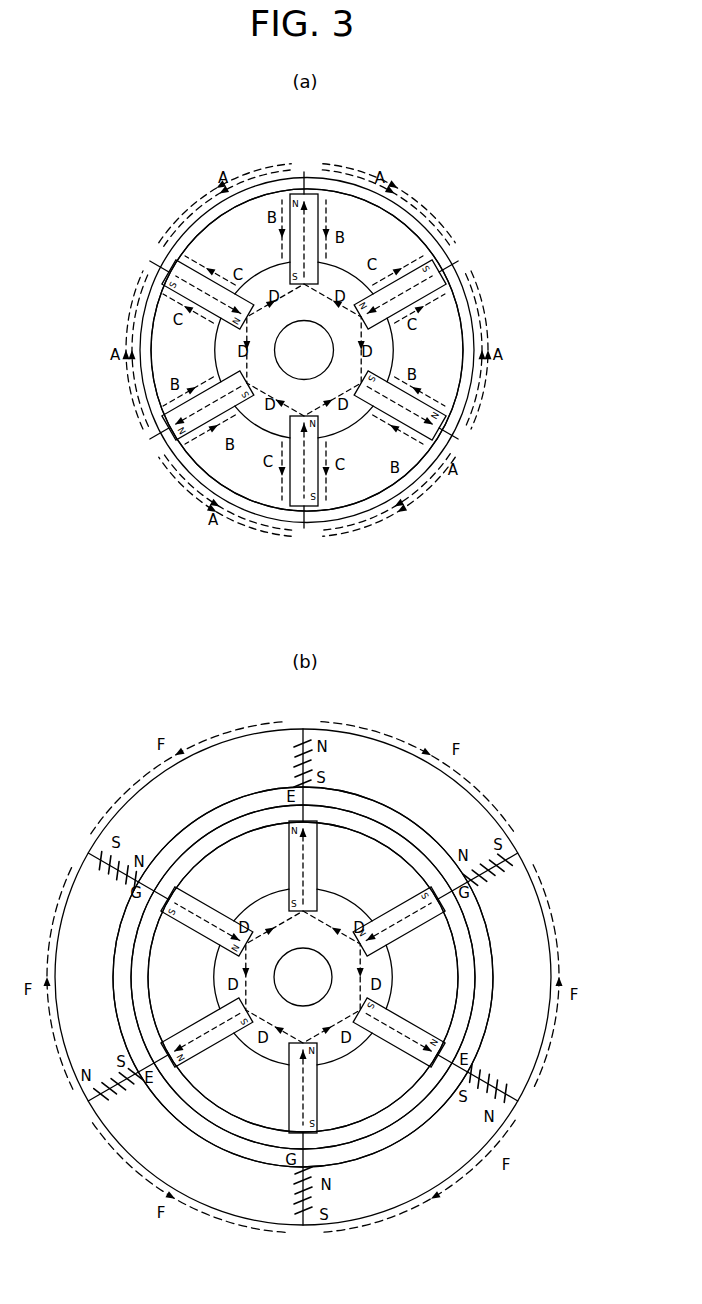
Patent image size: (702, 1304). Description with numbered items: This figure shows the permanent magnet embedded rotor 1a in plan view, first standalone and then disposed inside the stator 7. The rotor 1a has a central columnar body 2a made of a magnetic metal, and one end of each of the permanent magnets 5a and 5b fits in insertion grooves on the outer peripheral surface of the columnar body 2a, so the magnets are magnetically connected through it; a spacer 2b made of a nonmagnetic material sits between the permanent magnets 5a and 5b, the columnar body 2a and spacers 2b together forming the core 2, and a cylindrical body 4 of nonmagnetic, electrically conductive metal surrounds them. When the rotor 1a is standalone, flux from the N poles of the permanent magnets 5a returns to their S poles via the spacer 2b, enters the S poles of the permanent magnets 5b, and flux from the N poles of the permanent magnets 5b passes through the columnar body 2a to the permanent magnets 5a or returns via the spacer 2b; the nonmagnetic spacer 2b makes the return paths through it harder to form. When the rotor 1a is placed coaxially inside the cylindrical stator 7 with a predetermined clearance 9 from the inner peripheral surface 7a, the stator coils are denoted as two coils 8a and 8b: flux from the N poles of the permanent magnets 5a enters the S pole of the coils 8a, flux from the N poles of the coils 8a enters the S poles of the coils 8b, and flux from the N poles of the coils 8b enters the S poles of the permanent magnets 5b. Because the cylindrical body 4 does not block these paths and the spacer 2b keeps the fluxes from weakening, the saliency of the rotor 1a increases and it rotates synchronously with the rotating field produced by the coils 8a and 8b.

The rotor 1a is at (290, 377).
The columnar body and spacer assembly 2 is at (375, 783).
The columnar body 2a is at (326, 758).
The spacer 2b is at (323, 706).
The cylindrical body 4 is at (303, 663).
The permanent magnets 5a is at (334, 619).
The permanent magnets 5b is at (304, 653).
The stator 7 is at (315, 970).
The inner peripheral surface 7a is at (276, 977).
The coil 8a is at (335, 938).
The coil 8b is at (331, 1035).
The clearance 9 is at (320, 977).